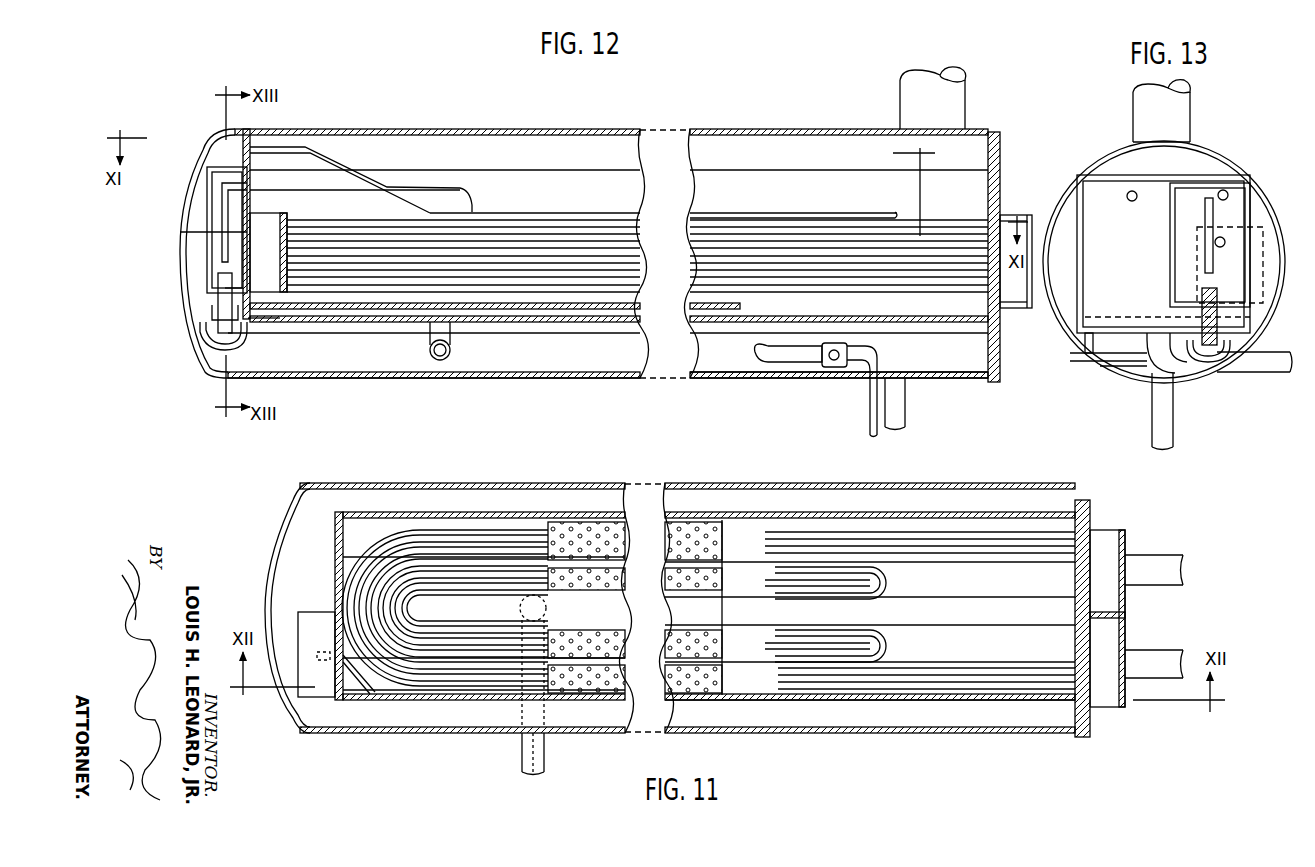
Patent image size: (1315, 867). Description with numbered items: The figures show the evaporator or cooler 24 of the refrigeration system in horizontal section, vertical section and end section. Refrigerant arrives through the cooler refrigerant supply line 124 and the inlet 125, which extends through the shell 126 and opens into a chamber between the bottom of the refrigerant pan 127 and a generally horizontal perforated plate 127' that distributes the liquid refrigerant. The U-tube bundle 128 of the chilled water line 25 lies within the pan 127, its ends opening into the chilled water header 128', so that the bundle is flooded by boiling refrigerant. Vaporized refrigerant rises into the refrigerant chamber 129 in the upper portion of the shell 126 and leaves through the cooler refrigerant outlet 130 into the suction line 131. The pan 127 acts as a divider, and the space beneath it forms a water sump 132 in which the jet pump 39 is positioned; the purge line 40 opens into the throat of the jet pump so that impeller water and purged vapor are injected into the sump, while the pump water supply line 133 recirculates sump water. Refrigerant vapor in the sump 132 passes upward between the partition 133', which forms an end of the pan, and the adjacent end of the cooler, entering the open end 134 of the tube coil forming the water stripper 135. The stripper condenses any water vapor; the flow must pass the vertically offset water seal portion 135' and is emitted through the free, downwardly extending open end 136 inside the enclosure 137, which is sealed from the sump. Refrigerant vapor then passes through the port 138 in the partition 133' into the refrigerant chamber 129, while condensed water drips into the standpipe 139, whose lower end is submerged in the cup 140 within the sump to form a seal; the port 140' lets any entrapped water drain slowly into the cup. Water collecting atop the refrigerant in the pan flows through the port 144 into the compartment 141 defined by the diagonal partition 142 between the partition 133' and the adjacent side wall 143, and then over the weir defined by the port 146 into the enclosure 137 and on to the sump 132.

In FIG. 12, the evaporator or cooler 24 is at (486, 128).
In FIG. 11, the chilled water line 25 is at (1154, 616).
In FIG. 12, the jet pump 39 is at (788, 358).
In FIG. 13, the jet pump 39 is at (1152, 368).
In FIG. 12, the purge line 40 is at (834, 367).
In FIG. 13, the purge line 40 is at (1112, 370).
In FIG. 13, the cooler refrigerant supply line 124 is at (1262, 365).
In FIG. 11, the cooler refrigerant supply line 124 is at (540, 752).
In FIG. 12, the cooler refrigerant inlet 125 is at (452, 352).
In FIG. 13, the cooler refrigerant inlet 125 is at (1155, 345).
In FIG. 12, the cooler shell 126 is at (404, 378).
In FIG. 13, the cooler shell 126 is at (1048, 326).
In FIG. 11, the cooler shell 126 is at (408, 483).
In FIG. 12, the refrigerant pan 127 is at (619, 339).
In FIG. 11, the refrigerant pan 127 is at (920, 610).
In FIG. 12, the perforated plate 127' is at (495, 332).
In FIG. 11, the perforated plate 127' is at (797, 607).
In FIG. 12, the U-tube bundle 128 is at (637, 234).
In FIG. 12, the chilled water header 128' is at (1026, 241).
In FIG. 11, the chilled water header 128' is at (1136, 618).
In FIG. 12, the refrigerant chamber 129 is at (608, 238).
In FIG. 12, the cooler refrigerant outlet 130 is at (938, 138).
In FIG. 13, the cooler refrigerant outlet 130 is at (1190, 142).
In FIG. 12, the suction line 131 is at (933, 98).
In FIG. 13, the suction line 131 is at (1161, 111).
In FIG. 12, the water sump 132 is at (714, 370).
In FIG. 13, the water sump 132 is at (1085, 356).
In FIG. 12, the pump water supply line 133 is at (917, 404).
In FIG. 13, the pump water supply line 133 is at (1177, 411).
In FIG. 12, the partition 133' is at (280, 210).
In FIG. 11, the partition 133' is at (319, 606).
In FIG. 12, the open end 134 is at (228, 148).
In FIG. 13, the open end 134 is at (1128, 197).
In FIG. 11, the open end 134 is at (343, 562).
In FIG. 12, the water stripper 135 is at (624, 177).
In FIG. 11, the water stripper 135 is at (445, 608).
In FIG. 12, the water seal portion 135' is at (684, 195).
In FIG. 12, the open end of stripper tube 136 is at (218, 280).
In FIG. 13, the open end of stripper tube 136 is at (1206, 252).
In FIG. 12, the enclosure 137 is at (215, 197).
In FIG. 13, the enclosure 137 is at (1180, 186).
In FIG. 11, the enclosure 137 is at (316, 654).
In FIG. 12, the port 138 is at (207, 178).
In FIG. 13, the port 138 is at (1220, 191).
In FIG. 12, the standpipe 139 is at (218, 312).
In FIG. 13, the standpipe 139 is at (1200, 318).
In FIG. 12, the cup 140 is at (193, 342).
In FIG. 13, the cup 140 is at (1243, 334).
In FIG. 12, the port 140' is at (189, 297).
In FIG. 12, the compartment 141 is at (265, 290).
In FIG. 11, the compartment 141 is at (356, 690).
In FIG. 11, the diagonal partition 142 is at (369, 692).
In FIG. 13, the side wall 143 is at (1085, 258).
In FIG. 11, the side wall 143 is at (870, 697).
In FIG. 12, the port 144 is at (268, 252).
In FIG. 13, the port 144 is at (1240, 265).
In FIG. 12, the port (weir) 146 is at (182, 231).
In FIG. 13, the port (weir) 146 is at (1221, 248).